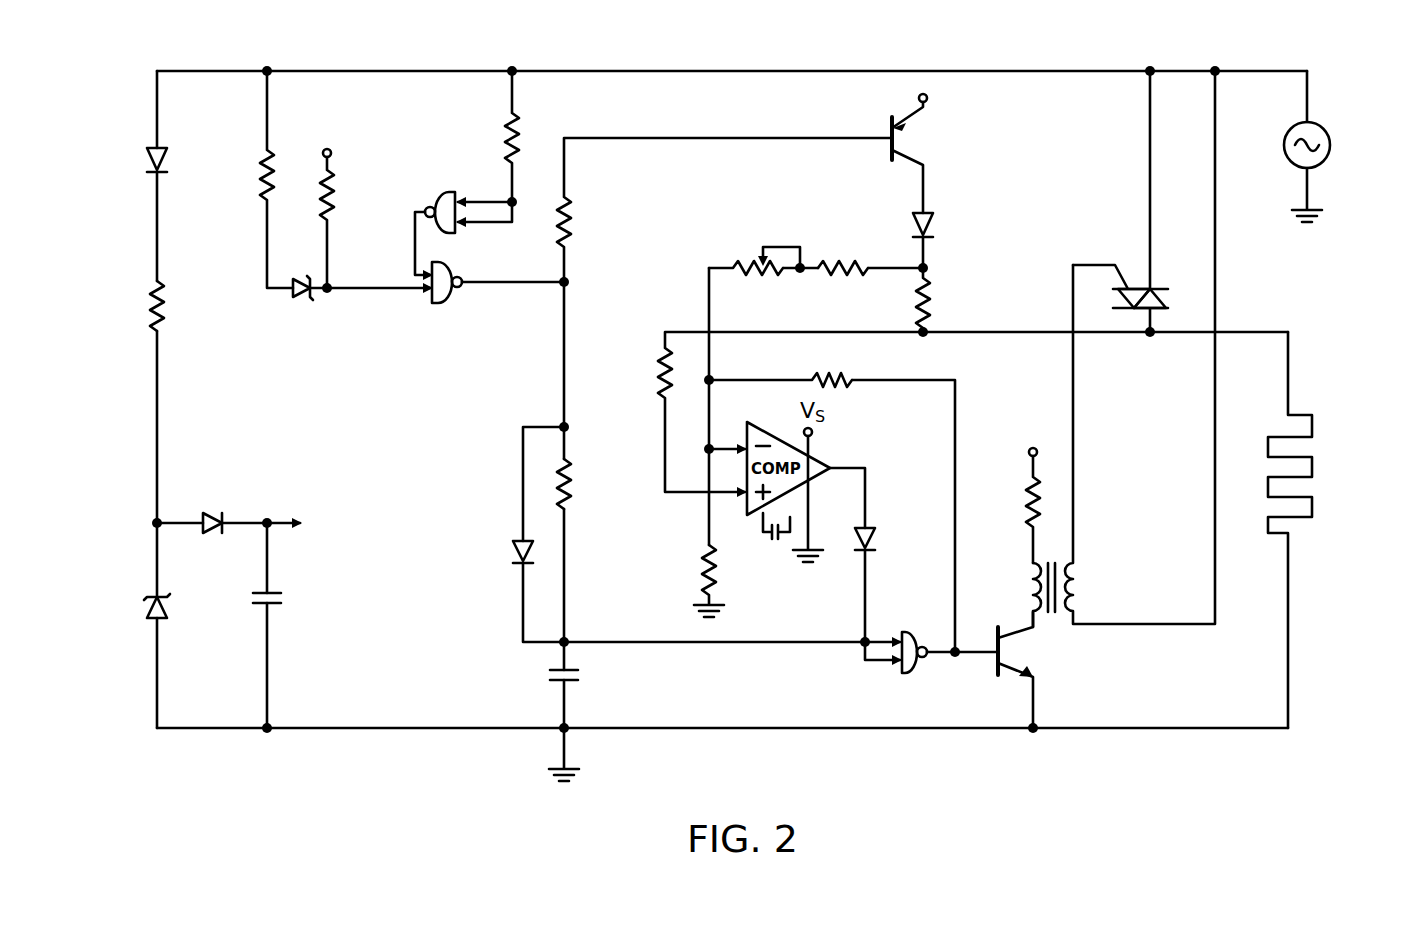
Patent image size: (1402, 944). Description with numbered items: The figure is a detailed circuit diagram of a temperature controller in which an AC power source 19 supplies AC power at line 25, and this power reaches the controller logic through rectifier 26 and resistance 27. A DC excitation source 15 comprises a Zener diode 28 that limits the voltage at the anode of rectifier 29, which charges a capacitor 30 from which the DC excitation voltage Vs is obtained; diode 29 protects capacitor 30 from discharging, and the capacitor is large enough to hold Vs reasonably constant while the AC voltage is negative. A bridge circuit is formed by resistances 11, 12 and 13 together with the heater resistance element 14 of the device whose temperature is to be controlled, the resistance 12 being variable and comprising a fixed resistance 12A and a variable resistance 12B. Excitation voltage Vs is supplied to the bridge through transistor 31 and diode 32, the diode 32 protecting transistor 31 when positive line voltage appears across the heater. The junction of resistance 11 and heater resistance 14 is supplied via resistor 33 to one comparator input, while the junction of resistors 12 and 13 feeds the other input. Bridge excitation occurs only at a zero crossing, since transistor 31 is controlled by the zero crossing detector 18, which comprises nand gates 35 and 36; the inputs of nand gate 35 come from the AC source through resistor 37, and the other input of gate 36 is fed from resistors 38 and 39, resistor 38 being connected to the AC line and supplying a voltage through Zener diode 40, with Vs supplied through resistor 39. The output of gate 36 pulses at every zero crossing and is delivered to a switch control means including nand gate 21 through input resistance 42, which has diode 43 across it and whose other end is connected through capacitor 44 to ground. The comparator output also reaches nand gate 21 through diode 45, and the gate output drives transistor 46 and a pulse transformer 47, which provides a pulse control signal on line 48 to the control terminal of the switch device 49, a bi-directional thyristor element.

The resistor 11 is at (930, 310).
The resistor 12 is at (809, 273).
The fixed resistance 12A is at (824, 263).
The variable resistance 12B is at (738, 262).
The resistor 13 is at (702, 570).
The heater resistance element 14 is at (1312, 452).
The DC excitation source 15 is at (199, 591).
The zero crossing detector 18 is at (374, 305).
The AC power source 19 is at (1323, 128).
The nand gate 21 is at (922, 668).
The line 25 is at (742, 71).
The rectifier 26 is at (148, 158).
The resistance 27 is at (152, 305).
The Zener diode 28 is at (150, 612).
The rectifier 29 is at (208, 510).
The capacitor 30 is at (282, 597).
The transistor 31 is at (913, 140).
The diode 32 is at (938, 232).
The resistor 33 is at (660, 380).
The nand gate 35 is at (440, 192).
The nand gate 36 is at (450, 304).
The resistor 37 is at (516, 130).
The resistor 38 is at (261, 168).
The resistor 39 is at (334, 208).
The Zener diode 40 is at (290, 300).
The input resistance 42 is at (571, 494).
The diode 43 is at (510, 552).
The capacitor 44 is at (577, 679).
The diode 45 is at (876, 540).
The transistor 46 is at (1012, 656).
The pulse transformer 47 is at (1084, 590).
The line 48 is at (1076, 454).
The switch device 49 is at (1158, 280).